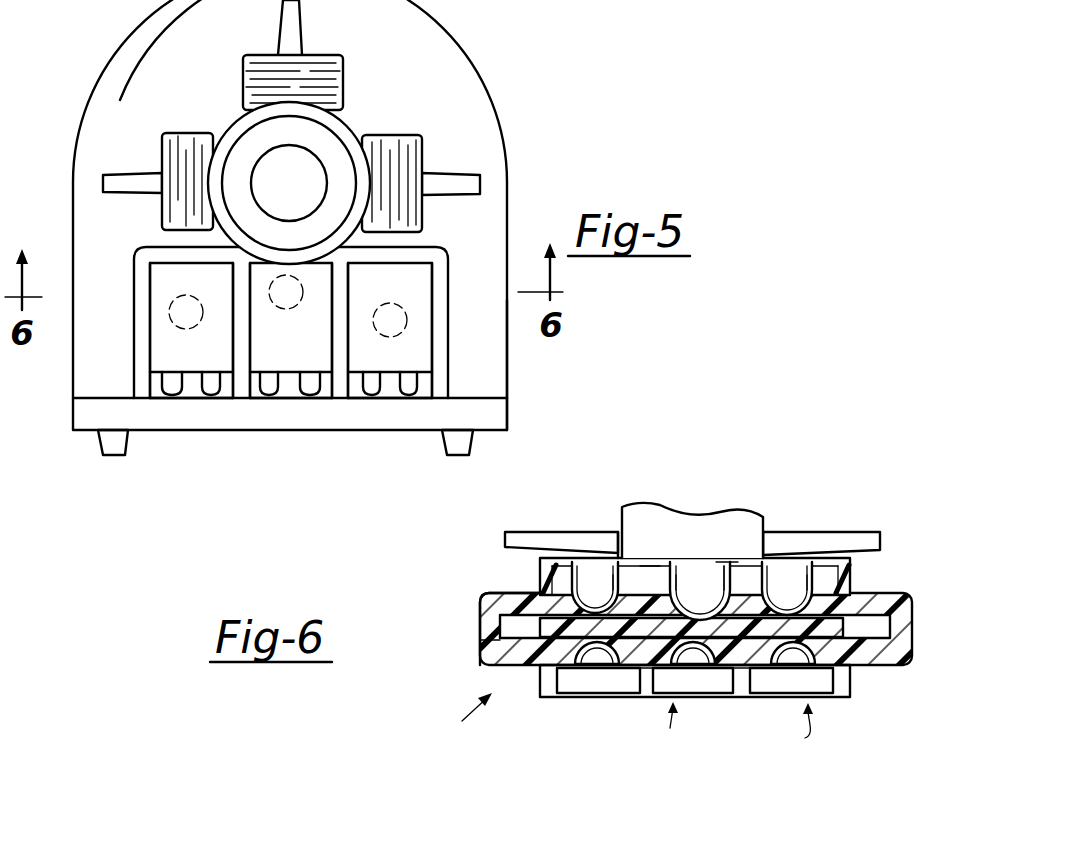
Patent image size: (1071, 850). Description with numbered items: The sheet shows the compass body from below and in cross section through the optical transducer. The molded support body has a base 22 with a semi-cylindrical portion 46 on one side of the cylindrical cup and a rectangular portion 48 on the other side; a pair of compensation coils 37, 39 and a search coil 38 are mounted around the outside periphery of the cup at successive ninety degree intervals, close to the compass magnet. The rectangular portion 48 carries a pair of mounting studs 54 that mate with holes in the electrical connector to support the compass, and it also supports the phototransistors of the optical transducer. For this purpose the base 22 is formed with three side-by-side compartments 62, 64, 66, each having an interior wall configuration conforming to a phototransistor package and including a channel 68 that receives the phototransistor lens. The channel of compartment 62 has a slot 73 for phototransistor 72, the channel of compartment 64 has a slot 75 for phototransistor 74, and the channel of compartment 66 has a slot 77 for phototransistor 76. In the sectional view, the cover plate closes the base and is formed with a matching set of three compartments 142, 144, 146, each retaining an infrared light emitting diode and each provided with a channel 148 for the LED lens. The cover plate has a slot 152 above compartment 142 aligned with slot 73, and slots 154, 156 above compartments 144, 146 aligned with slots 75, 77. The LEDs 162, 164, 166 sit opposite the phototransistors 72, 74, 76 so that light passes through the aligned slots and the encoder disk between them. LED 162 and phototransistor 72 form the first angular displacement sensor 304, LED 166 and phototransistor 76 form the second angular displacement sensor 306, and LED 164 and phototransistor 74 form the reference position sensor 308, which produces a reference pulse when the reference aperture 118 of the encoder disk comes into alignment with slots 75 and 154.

In FIG. 5, the base 22 is at (469, 107).
In FIG. 6, the base 22 is at (496, 592).
In FIG. 5, the compensation coil 37 is at (386, 135).
In FIG. 5, the search coil 38 is at (211, 96).
In FIG. 5, the compensation coil 39 is at (343, 89).
In FIG. 5, the semi-cylindrical portion 46 is at (189, 51).
In FIG. 5, the rectangular portion 48 is at (508, 382).
In FIG. 5, the mounting studs 54 is at (120, 448).
In FIG. 6, the compartment 62 is at (540, 596).
In FIG. 6, the compartment 64 is at (727, 565).
In FIG. 6, the compartment 66 is at (817, 596).
In FIG. 6, the channel 68 is at (612, 588).
In FIG. 5, the phototransistor 72 is at (203, 364).
In FIG. 6, the phototransistor 72 is at (567, 572).
In FIG. 6, the slot 73 is at (597, 610).
In FIG. 5, the phototransistor 74 is at (266, 362).
In FIG. 6, the phototransistor 74 is at (700, 612).
In FIG. 6, the slot 75 is at (655, 575).
In FIG. 5, the phototransistor 76 is at (367, 364).
In FIG. 6, the phototransistor 76 is at (768, 573).
In FIG. 6, the slot 77 is at (797, 612).
In FIG. 6, the reference aperture 118 is at (733, 563).
In FIG. 6, the compartment 142 is at (567, 695).
In FIG. 6, the compartment 144 is at (663, 697).
In FIG. 6, the compartment 146 is at (740, 690).
In FIG. 6, the channel 148 is at (497, 660).
In FIG. 6, the slot 152 is at (598, 669).
In FIG. 6, the slot 154 is at (693, 669).
In FIG. 6, the slot 156 is at (855, 632).
In FIG. 6, the LED 162 is at (572, 688).
In FIG. 6, the LED 164 is at (684, 700).
In FIG. 6, the LED 166 is at (815, 690).
In FIG. 6, the first angular displacement sensor 304 is at (443, 717).
In FIG. 6, the second angular displacement sensor 306 is at (784, 730).
In FIG. 6, the reference position sensor 308 is at (645, 728).